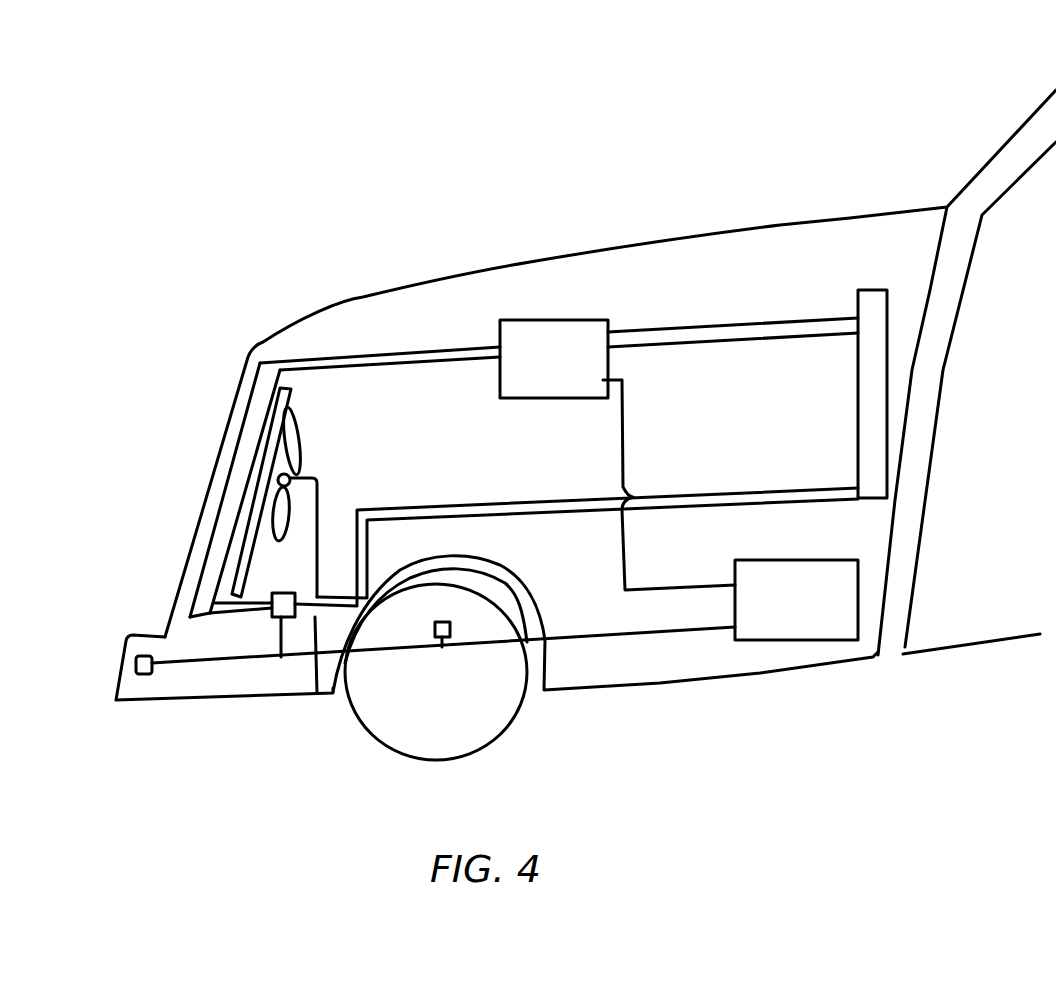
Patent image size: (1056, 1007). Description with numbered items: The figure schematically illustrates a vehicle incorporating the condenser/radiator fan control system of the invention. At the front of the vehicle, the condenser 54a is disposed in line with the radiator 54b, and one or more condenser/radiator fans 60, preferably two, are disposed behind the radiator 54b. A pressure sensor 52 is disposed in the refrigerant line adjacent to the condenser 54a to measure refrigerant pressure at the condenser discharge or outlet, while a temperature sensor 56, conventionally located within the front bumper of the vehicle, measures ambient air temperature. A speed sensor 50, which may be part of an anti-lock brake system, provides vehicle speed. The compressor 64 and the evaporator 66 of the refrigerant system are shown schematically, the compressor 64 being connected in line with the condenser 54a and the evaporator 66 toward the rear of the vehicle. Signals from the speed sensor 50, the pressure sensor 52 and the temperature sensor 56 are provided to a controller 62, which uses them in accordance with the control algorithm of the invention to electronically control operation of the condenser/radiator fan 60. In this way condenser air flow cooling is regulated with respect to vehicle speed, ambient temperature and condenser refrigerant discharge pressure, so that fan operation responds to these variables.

The speed sensor 50 is at (448, 625).
The pressure sensor 52 is at (270, 617).
The condenser 54a is at (226, 478).
The radiator 54b is at (287, 392).
The temperature sensor 56 is at (134, 670).
The condenser/radiator fan 60 is at (298, 447).
The controller 62 is at (810, 634).
The compressor 64 is at (540, 324).
The evaporator 66 is at (877, 333).